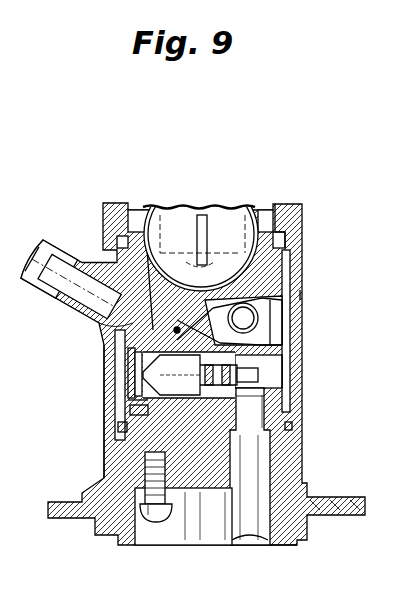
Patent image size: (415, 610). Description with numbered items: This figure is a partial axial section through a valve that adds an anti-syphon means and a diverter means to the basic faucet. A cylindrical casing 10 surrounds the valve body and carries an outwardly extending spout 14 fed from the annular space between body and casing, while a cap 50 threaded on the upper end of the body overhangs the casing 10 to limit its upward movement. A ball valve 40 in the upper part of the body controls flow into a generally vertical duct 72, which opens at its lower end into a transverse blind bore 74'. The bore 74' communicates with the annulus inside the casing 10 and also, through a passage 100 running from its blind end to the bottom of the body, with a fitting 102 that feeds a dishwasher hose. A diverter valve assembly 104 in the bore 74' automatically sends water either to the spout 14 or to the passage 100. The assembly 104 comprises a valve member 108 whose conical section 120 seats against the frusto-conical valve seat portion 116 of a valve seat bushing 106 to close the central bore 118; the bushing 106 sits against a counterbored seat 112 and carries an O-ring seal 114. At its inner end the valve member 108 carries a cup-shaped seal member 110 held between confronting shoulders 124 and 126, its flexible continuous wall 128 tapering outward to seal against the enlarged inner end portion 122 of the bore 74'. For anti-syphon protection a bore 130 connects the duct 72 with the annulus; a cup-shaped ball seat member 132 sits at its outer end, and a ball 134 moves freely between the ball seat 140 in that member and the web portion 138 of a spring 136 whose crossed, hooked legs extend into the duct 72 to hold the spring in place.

The casing 10 is at (195, 205).
The spout 14 is at (59, 247).
The ball valve 40 is at (250, 206).
The cap 50 is at (303, 213).
The duct 72 is at (97, 326).
The transverse blind bore 74' is at (312, 340).
The outlet passage 100 is at (258, 406).
The fitting 102 is at (278, 546).
The diverter valve assembly 104 is at (282, 352).
The valve seat bushing 106 is at (140, 410).
The valve member 108 is at (131, 364).
The seal member 110 is at (283, 383).
The seat 112 is at (116, 442).
The O-ring seal 114 is at (118, 427).
The frusto-conical valve seat portion 116 is at (137, 403).
The central bore 118 is at (160, 355).
The conical section 120 is at (141, 378).
The inner end portion 122 is at (283, 330).
The shoulder 124 is at (200, 388).
The shoulder 126 is at (272, 359).
The flexible continuous wall 128 is at (250, 466).
The bore 130 is at (255, 300).
The ball seat member 132 is at (302, 295).
The ball 134 is at (283, 300).
The spring 136 is at (176, 331).
The web portion 138 is at (238, 306).
The ball seat 140 is at (291, 305).